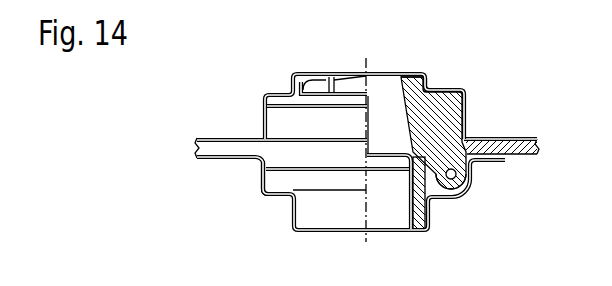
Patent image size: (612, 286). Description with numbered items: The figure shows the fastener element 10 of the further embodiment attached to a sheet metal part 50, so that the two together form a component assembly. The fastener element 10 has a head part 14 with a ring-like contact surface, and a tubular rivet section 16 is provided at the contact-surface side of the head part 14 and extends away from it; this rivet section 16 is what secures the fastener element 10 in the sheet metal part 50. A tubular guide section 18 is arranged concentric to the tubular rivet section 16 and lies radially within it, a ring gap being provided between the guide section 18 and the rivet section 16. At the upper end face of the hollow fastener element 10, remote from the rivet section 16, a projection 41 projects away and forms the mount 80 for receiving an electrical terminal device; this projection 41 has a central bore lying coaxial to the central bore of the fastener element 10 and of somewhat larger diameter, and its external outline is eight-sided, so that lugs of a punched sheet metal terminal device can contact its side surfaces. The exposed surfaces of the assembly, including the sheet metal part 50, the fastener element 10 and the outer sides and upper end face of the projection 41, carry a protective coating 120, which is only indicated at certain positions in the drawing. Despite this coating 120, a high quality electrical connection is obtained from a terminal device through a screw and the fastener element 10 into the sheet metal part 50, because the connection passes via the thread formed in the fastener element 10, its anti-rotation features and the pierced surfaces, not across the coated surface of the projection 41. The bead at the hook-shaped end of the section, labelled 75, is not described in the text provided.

The fastener element 10 is at (258, 119).
The protective coating 120 is at (302, 73).
The mount 80 is at (413, 74).
The projection 41 is at (437, 84).
The head part 14 is at (467, 123).
The sheet metal part 50 is at (508, 158).
The hook bead 75 is at (463, 193).
The tubular guide section 18 is at (432, 215).
The tubular rivet section 16 is at (262, 190).